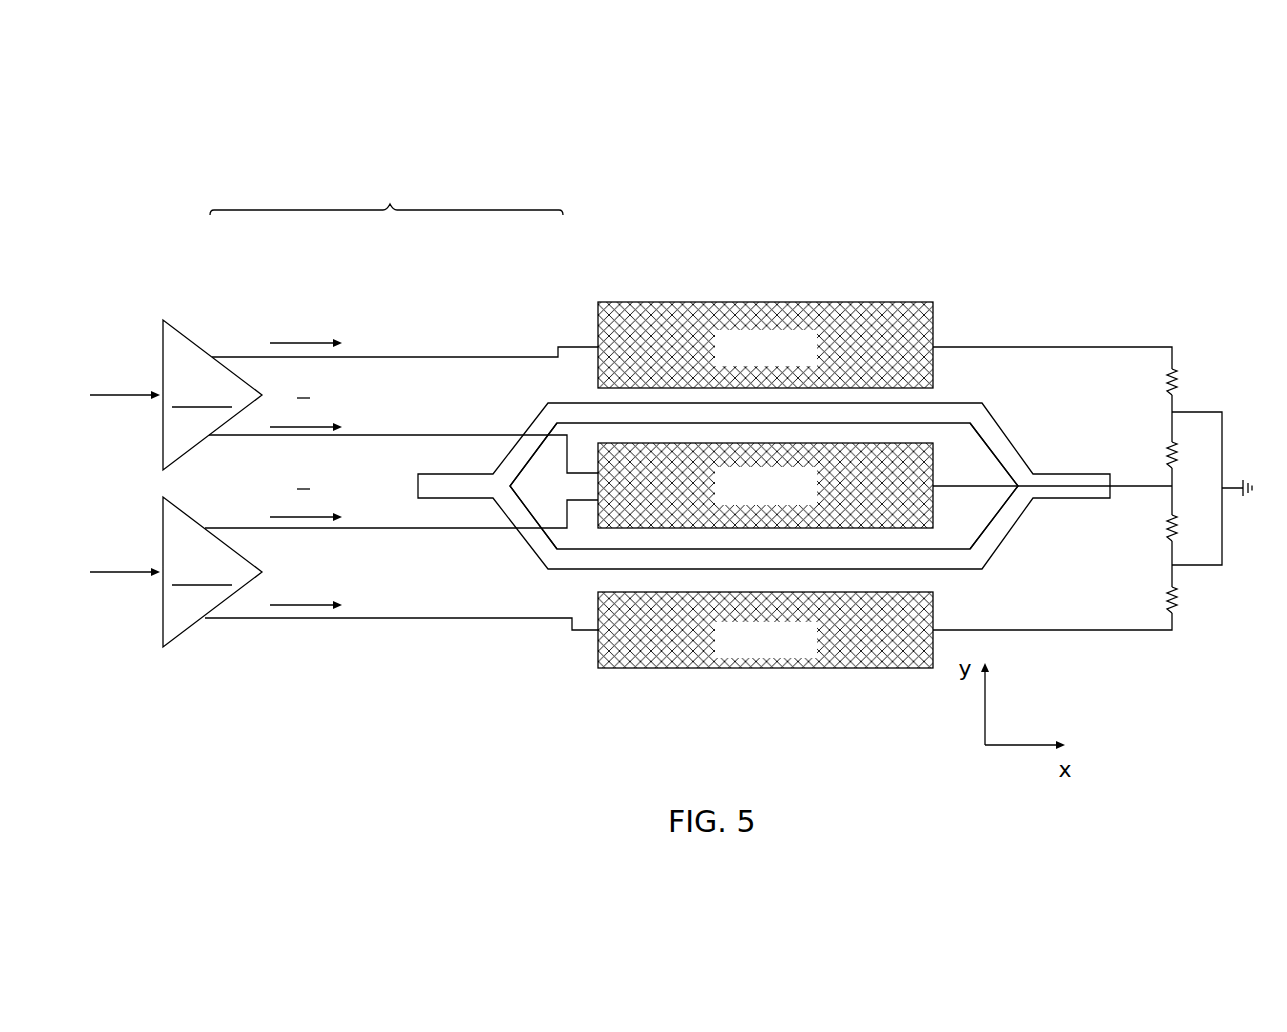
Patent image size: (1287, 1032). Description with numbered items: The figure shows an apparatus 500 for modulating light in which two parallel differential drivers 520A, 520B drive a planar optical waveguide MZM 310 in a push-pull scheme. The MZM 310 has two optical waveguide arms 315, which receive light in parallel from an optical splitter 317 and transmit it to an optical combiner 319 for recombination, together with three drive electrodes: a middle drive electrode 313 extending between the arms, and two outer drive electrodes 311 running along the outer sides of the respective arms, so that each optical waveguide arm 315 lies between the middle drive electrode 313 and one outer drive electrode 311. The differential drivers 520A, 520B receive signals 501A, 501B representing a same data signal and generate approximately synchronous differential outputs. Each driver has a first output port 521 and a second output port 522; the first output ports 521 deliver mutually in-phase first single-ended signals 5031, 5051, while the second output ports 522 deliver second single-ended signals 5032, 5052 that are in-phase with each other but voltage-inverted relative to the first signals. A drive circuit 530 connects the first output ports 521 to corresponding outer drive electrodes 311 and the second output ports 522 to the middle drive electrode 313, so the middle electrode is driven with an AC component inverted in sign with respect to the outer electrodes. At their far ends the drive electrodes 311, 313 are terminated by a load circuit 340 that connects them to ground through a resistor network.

The apparatus for modulating light 500 is at (723, 138).
The drive circuit 530 is at (386, 189).
The signal 501A is at (120, 395).
The signal 501B is at (100, 572).
The differential driver 520A is at (212, 395).
The differential driver 520B is at (212, 572).
The first output port 521 is at (213, 357).
The second output port 522 is at (210, 437).
The first single-ended signal 5031 is at (302, 343).
The second single-ended signal 5032 is at (310, 425).
The first single-ended signal 5051 is at (322, 600).
The second single-ended signal 5052 is at (313, 515).
The planar optical waveguide MZM 310 is at (764, 446).
The outer drive electrode 311 is at (746, 361).
The middle drive electrode 313 is at (746, 500).
The optical waveguide arm 315 is at (565, 403).
The optical splitter 317 is at (483, 454).
The optical combiner 319 is at (1038, 454).
The load circuit 340 is at (1145, 288).